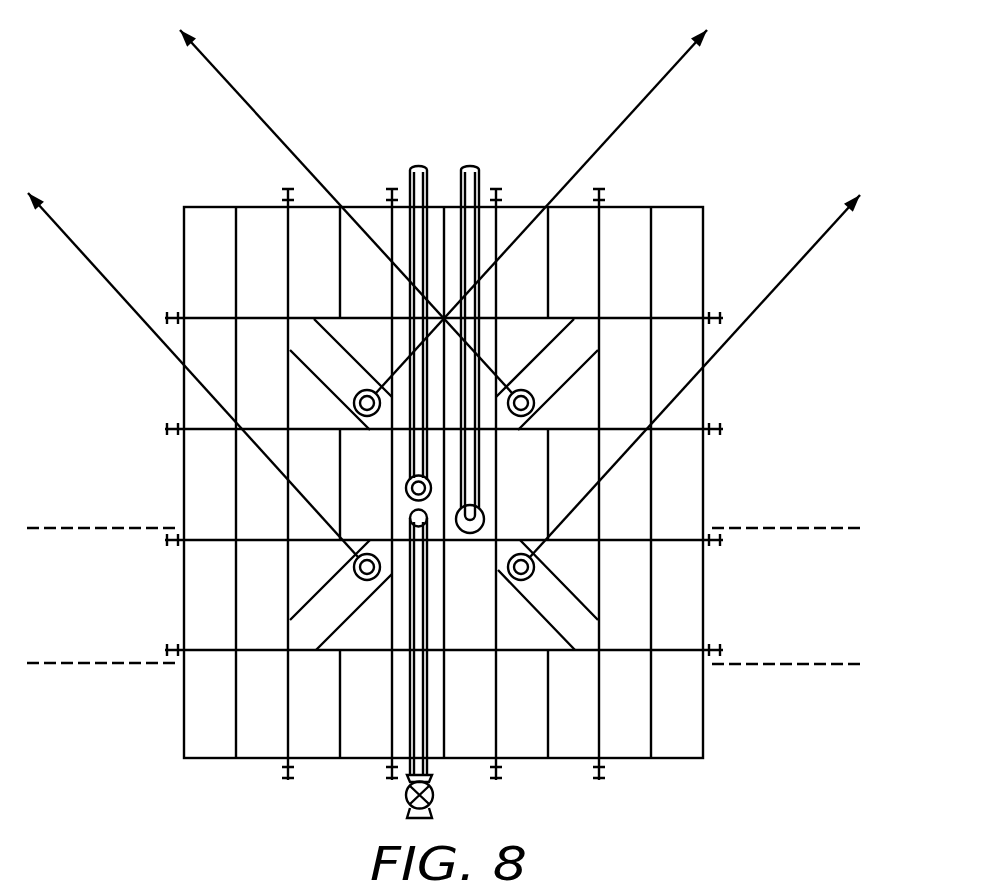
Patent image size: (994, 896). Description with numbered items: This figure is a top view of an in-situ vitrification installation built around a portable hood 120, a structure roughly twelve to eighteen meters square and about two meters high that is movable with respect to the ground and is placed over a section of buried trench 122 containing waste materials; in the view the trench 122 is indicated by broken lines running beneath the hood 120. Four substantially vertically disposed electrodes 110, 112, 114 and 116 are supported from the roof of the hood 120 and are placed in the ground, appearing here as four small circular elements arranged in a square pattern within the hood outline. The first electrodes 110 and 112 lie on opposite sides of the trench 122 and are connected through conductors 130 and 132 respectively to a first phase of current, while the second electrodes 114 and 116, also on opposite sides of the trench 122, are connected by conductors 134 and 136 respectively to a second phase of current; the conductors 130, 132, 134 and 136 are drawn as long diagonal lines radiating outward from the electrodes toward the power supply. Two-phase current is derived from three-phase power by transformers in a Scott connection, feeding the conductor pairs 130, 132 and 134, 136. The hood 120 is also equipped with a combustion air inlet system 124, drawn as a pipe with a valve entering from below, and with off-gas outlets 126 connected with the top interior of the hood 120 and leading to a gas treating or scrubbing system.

The electrode 110 is at (357, 393).
The electrode 112 is at (533, 577).
The electrode 114 is at (531, 394).
The electrode 116 is at (357, 578).
The portable hood 120 is at (703, 722).
The buried trench 122 is at (772, 528).
The combustion air inlet system 124 is at (410, 727).
The off-gas outlets 126 is at (481, 171).
The conductor 130 is at (653, 88).
The conductor 132 is at (772, 293).
The conductor 134 is at (247, 101).
The conductor 136 is at (80, 253).